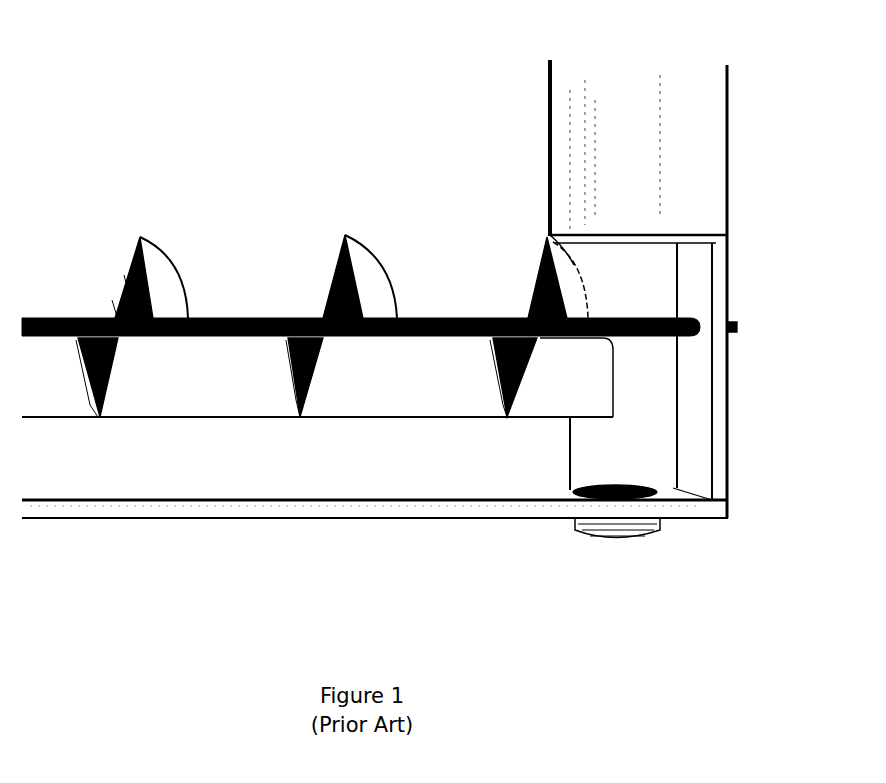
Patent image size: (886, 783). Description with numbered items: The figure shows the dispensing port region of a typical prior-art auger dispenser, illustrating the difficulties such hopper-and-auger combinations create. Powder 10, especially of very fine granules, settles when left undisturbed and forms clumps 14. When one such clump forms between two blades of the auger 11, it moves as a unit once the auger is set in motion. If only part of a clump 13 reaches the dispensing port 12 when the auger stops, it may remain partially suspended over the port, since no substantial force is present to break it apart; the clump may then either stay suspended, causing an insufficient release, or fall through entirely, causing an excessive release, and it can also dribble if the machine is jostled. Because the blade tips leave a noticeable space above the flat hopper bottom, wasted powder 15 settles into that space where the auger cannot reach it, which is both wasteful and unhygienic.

The powder 10 is at (282, 252).
The auger 11 is at (393, 338).
The dispensing port 12 is at (603, 540).
The clump 13 is at (615, 370).
The clumps 14 is at (152, 397).
The wasted powder 15 is at (492, 482).